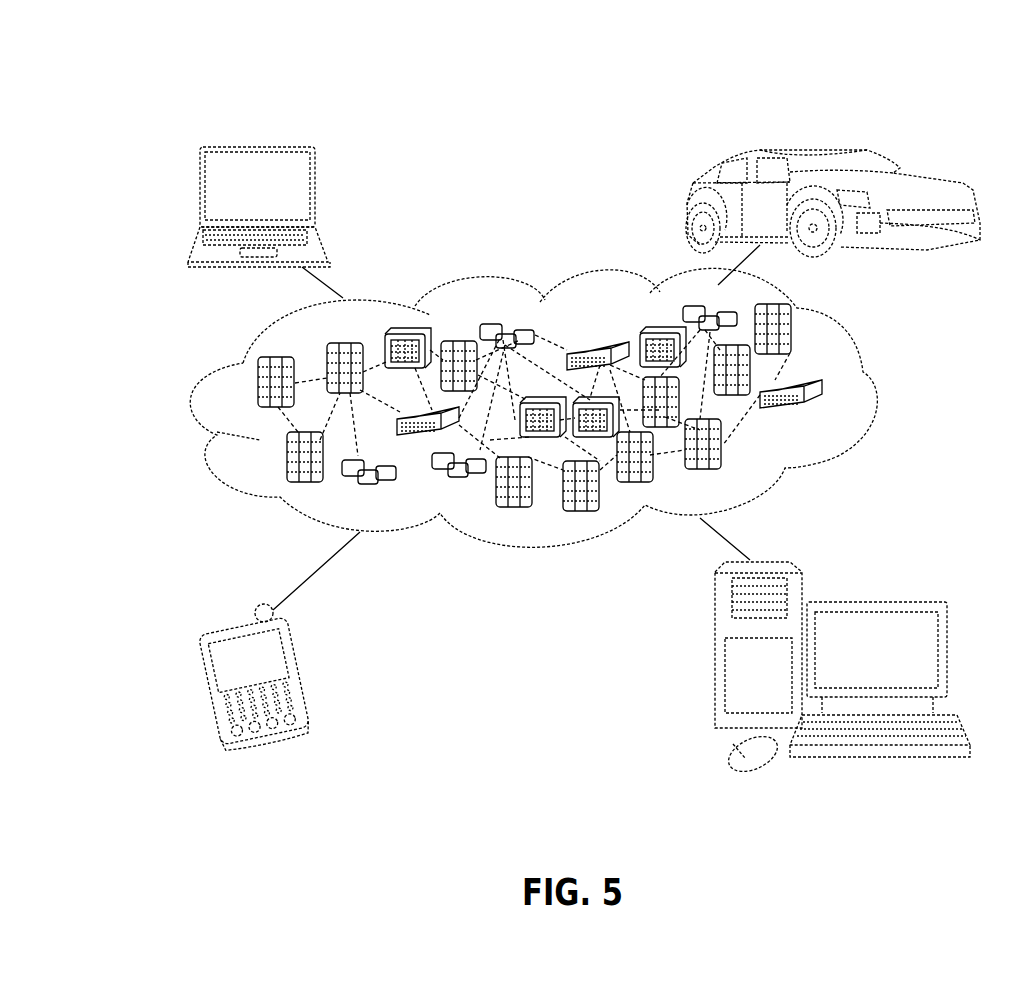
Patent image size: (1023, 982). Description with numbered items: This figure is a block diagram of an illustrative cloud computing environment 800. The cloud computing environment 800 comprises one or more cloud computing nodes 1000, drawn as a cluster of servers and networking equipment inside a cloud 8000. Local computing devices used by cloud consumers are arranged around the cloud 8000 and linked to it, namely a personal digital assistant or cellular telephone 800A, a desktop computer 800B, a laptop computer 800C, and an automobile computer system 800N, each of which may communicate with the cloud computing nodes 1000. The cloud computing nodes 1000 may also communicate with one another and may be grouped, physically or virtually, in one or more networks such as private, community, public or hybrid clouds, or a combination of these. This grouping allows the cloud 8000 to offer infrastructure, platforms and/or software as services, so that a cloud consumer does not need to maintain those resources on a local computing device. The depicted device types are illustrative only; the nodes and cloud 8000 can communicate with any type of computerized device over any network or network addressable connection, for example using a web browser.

The cloud computing environment 800 is at (131, 60).
The personal digital assistant or cellular telephone 800A is at (307, 670).
The desktop computer 800B is at (873, 602).
The laptop computer 800C is at (318, 193).
The automobile computer system 800N is at (688, 205).
The cloud 8000 is at (873, 390).
The cloud computing nodes 1000 is at (840, 416).